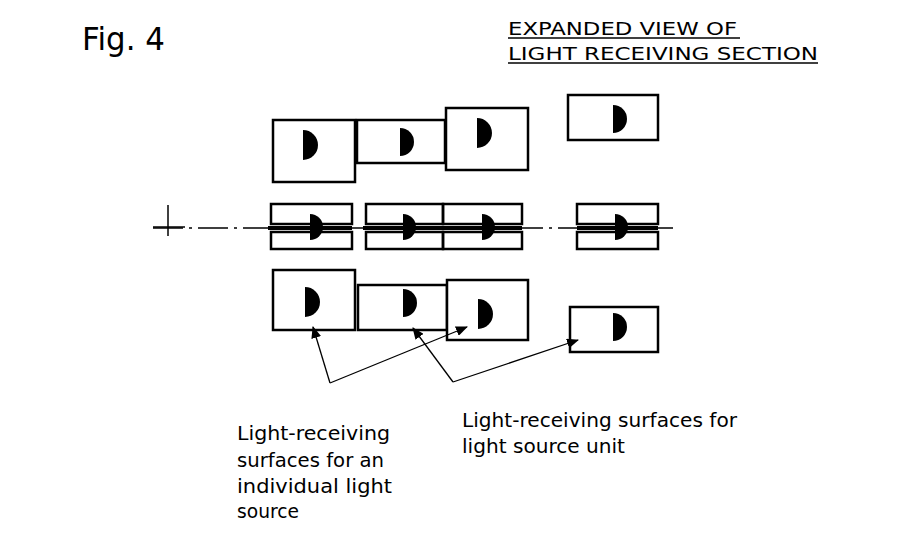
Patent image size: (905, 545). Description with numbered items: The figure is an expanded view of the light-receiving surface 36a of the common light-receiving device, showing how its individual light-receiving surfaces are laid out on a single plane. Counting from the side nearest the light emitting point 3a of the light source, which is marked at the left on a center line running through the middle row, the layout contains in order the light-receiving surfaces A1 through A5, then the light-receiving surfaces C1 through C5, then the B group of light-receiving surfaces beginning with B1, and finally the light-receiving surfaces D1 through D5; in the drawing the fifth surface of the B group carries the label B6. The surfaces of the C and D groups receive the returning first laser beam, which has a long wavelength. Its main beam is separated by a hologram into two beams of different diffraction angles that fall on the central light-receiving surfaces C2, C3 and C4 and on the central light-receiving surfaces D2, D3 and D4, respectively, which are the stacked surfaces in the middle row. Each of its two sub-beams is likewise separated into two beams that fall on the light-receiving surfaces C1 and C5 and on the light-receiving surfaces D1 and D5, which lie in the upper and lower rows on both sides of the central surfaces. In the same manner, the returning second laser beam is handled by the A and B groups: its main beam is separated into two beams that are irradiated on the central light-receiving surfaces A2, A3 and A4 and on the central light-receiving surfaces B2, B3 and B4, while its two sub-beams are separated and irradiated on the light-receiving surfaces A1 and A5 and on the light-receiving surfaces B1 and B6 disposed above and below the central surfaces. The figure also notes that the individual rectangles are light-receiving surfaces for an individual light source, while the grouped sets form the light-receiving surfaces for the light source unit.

The light-receiving surface 36a is at (409, 196).
The light emitting point 3a is at (168, 206).
The light-receiving surface A1 is at (296, 151).
The light-receiving surface A2 is at (271, 214).
The light-receiving surface A3 is at (268, 228).
The light-receiving surface A4 is at (271, 240).
The light-receiving surface A5 is at (296, 300).
The light-receiving surface B1 is at (500, 139).
The light-receiving surface B2 is at (498, 214).
The light-receiving surface B3 is at (545, 228).
The light-receiving surface B4 is at (498, 240).
The light-receiving surface B5 (labelled B6) B6 is at (500, 310).
The light-receiving surface C1 is at (401, 141).
The light-receiving surface C2 is at (404, 214).
The light-receiving surface C3 is at (366, 229).
The light-receiving surface C4 is at (404, 240).
The light-receiving surface C5 is at (402, 307).
The light-receiving surface D1 is at (613, 117).
The light-receiving surface D2 is at (617, 214).
The light-receiving surface D3 is at (577, 227).
The light-receiving surface D4 is at (617, 240).
The light-receiving surface D5 is at (614, 329).